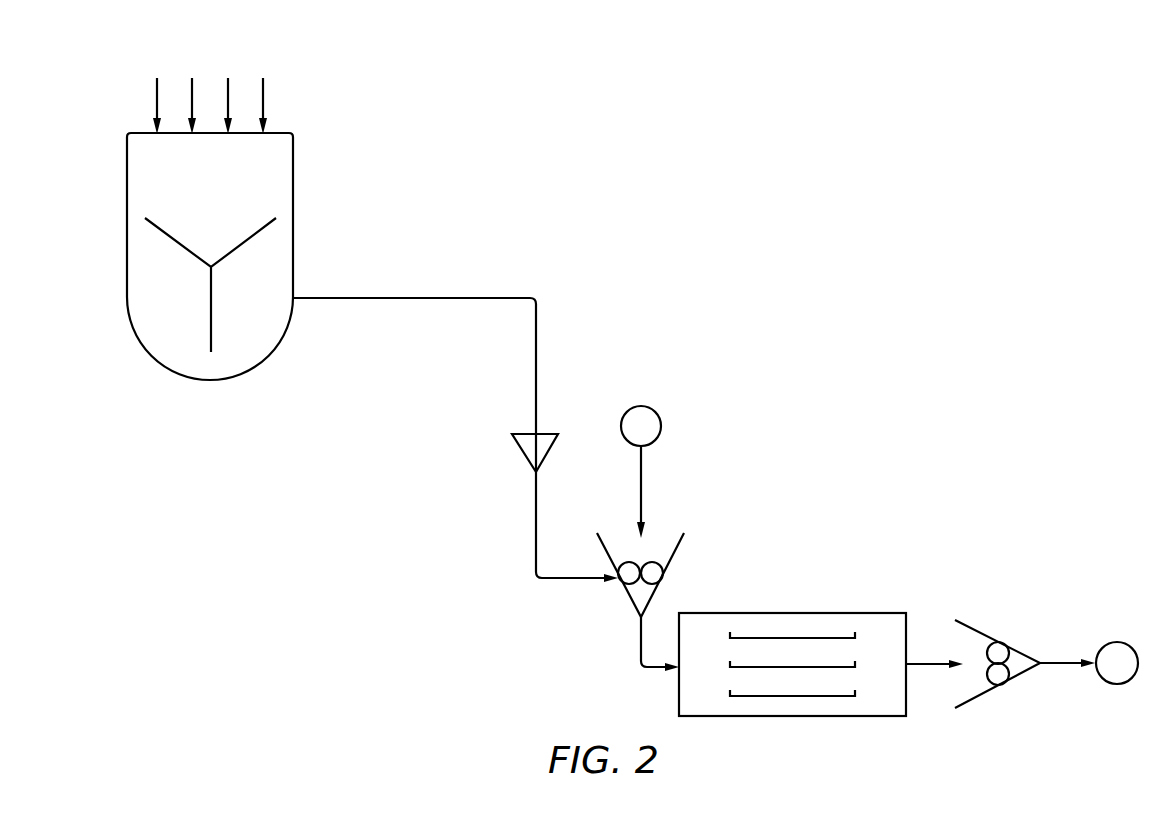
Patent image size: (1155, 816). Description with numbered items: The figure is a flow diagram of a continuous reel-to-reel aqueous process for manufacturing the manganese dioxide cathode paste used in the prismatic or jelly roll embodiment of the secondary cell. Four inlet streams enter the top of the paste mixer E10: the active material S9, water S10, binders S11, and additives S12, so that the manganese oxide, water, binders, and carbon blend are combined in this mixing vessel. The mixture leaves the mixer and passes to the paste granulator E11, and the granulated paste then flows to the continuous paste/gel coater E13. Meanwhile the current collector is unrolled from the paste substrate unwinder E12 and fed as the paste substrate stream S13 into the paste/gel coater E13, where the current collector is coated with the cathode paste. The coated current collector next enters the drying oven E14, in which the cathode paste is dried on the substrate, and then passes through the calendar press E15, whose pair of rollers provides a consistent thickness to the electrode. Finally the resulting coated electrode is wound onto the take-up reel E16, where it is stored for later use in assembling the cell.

The paste mixer E10 is at (126, 233).
The active material S9 is at (157, 97).
The water S10 is at (193, 97).
The binders S11 is at (228, 97).
The additives S12 is at (262, 97).
The paste granulator E11 is at (522, 453).
The paste substrate unwinder E12 is at (660, 413).
The paste substrate S13 is at (643, 474).
The paste/gel coater E13 is at (620, 586).
The drying oven E14 is at (820, 716).
The calendar press E15 is at (993, 690).
The take-up reel E16 is at (1106, 648).